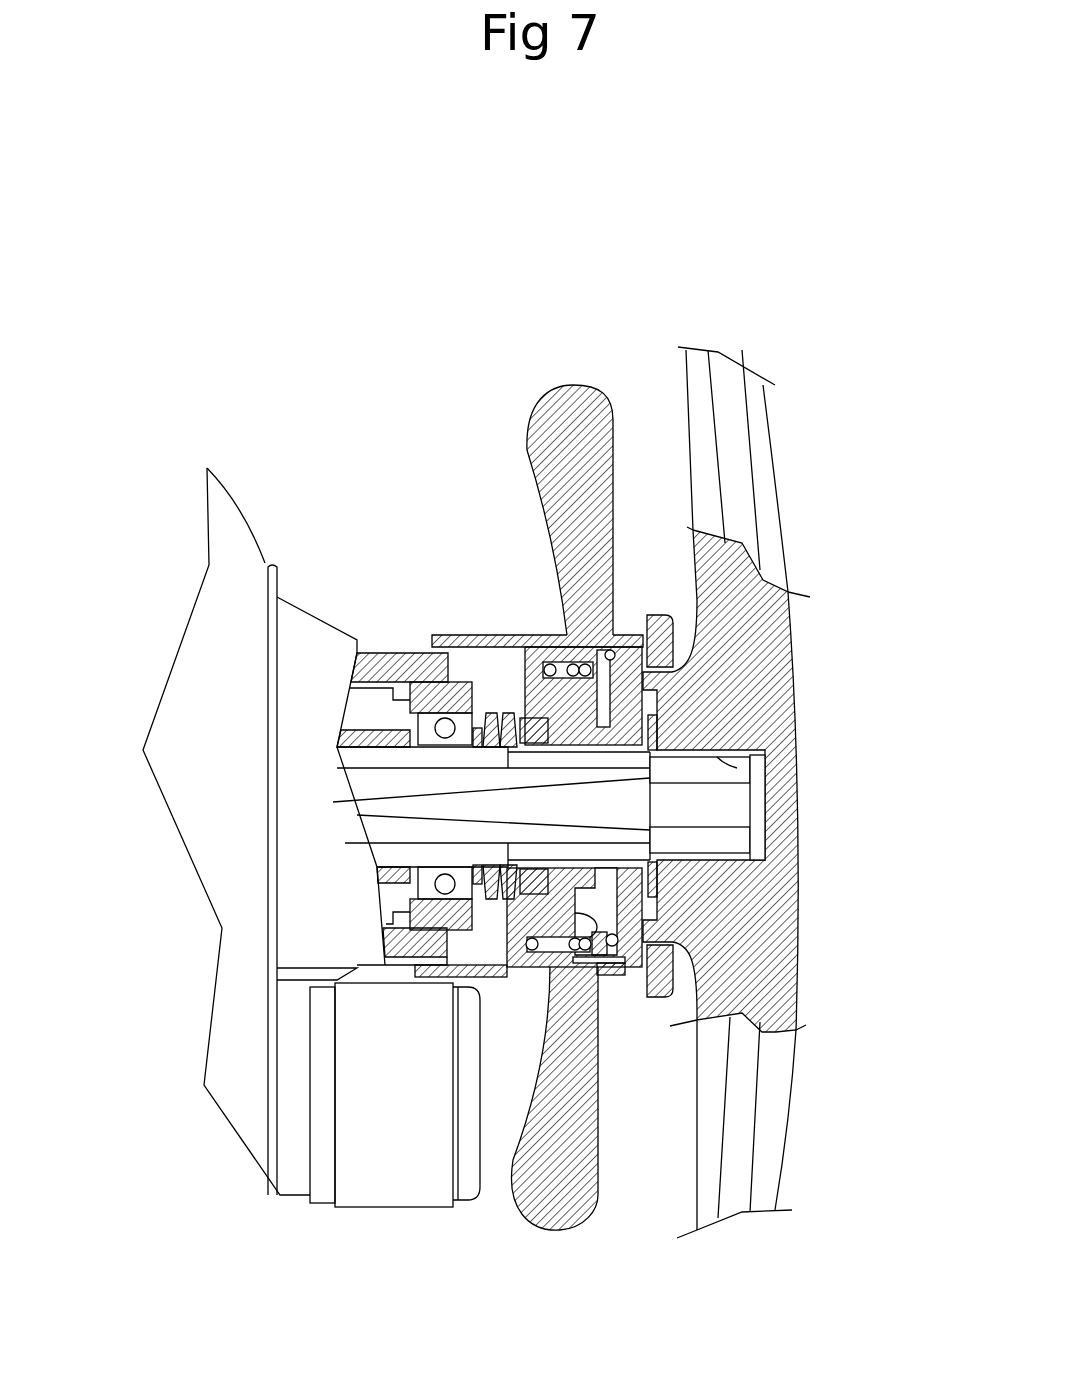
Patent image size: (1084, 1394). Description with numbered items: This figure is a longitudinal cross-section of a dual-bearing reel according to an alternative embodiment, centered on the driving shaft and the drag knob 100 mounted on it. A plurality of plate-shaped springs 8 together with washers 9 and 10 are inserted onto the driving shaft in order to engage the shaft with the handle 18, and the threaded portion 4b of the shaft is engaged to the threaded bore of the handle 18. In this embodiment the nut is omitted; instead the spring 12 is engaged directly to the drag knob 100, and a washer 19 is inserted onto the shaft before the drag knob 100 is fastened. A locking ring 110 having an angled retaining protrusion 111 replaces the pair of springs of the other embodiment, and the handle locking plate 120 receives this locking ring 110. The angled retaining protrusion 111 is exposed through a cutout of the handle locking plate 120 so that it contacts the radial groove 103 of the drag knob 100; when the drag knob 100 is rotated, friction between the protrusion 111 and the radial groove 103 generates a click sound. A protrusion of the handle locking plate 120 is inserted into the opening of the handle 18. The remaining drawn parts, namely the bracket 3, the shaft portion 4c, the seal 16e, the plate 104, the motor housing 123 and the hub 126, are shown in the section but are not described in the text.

The motor bracket 3 is at (235, 540).
The threaded portion 4b is at (690, 767).
The shaft 4c is at (433, 785).
The plate-shaped springs 8 is at (505, 713).
The washer 9 is at (383, 913).
The washer 10 is at (383, 943).
The spring 12 is at (562, 663).
The seal lip 16e is at (690, 632).
The handle 18 is at (770, 527).
The washer 19 is at (655, 740).
The drag knob 100 is at (580, 383).
The radial groove 103 is at (605, 980).
The hub plate 104 is at (550, 975).
The locking ring 110 is at (619, 1005).
The angled retaining protrusion 111 is at (608, 650).
The handle locking plate 120 is at (648, 711).
The motor 123 is at (515, 974).
The hub 126 is at (660, 903).